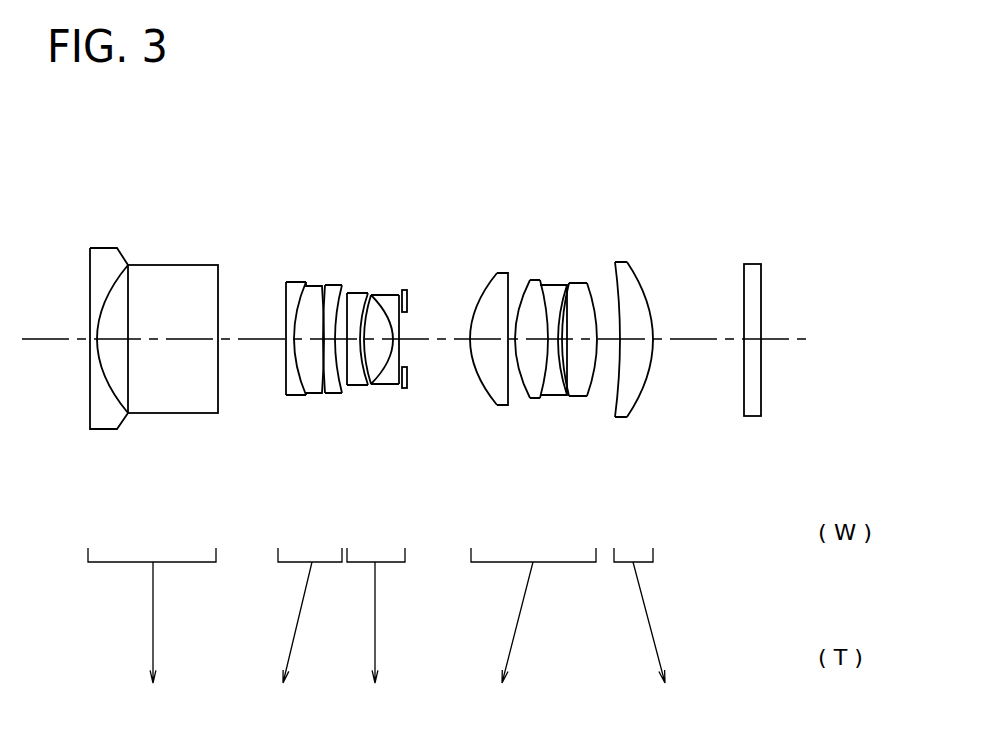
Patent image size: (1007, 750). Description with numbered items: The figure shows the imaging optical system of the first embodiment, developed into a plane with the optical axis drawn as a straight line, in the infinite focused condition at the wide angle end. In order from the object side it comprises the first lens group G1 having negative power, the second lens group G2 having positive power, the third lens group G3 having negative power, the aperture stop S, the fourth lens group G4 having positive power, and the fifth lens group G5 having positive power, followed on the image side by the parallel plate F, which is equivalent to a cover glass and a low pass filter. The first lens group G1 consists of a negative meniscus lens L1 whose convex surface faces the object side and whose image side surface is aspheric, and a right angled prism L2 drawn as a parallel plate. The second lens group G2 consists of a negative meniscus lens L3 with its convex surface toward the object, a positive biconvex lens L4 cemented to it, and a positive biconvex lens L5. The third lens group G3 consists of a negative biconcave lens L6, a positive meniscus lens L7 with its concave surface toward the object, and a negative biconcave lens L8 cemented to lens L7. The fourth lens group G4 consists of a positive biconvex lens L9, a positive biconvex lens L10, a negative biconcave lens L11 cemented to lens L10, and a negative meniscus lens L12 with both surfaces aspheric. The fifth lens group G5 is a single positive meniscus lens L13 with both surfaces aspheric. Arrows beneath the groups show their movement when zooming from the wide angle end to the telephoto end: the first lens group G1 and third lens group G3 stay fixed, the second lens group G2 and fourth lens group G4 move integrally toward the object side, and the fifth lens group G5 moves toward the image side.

The negative meniscus lens L1 is at (103, 263).
The right angled prism L2 is at (162, 397).
The negative meniscus lens L3 is at (296, 288).
The positive biconvex lens L4 is at (315, 382).
The positive biconvex lens L5 is at (338, 292).
The negative biconcave lens L6 is at (358, 380).
The positive meniscus lens L7 is at (376, 305).
The negative biconcave lens L8 is at (390, 373).
The positive biconvex lens L9 is at (502, 383).
The positive biconvex lens L10 is at (535, 290).
The negative biconcave lens L11 is at (554, 380).
The negative meniscus lens L12 is at (580, 293).
The positive meniscus lens L13 is at (630, 393).
The aperture stop S is at (405, 293).
The parallel plate F is at (752, 272).
The first lens group G1 is at (144, 615).
The second lens group G2 is at (300, 615).
The third lens group G3 is at (387, 615).
The fourth lens group G4 is at (524, 615).
The fifth lens group G5 is at (643, 615).